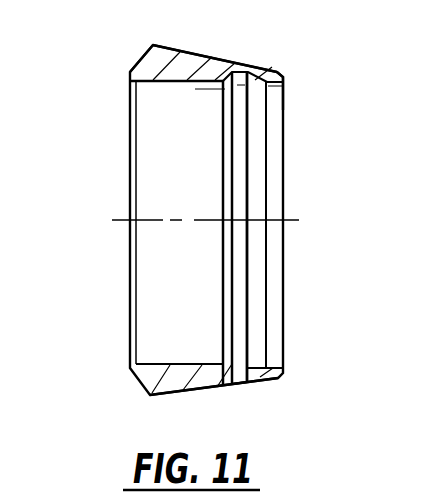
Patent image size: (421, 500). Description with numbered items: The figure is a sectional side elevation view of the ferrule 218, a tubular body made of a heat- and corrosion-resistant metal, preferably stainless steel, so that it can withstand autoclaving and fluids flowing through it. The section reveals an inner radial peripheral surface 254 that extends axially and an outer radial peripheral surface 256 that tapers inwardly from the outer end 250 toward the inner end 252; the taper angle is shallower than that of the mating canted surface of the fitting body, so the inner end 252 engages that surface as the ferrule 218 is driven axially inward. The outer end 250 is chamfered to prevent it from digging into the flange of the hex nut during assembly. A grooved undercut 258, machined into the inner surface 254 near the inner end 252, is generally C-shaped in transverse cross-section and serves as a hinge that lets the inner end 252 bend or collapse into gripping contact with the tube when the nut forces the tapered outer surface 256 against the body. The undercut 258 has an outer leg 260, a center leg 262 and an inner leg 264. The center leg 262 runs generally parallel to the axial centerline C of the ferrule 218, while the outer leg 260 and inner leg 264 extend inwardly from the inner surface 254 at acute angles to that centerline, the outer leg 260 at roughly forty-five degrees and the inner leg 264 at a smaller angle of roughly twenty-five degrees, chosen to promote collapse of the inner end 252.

The ferrule 218 is at (128, 193).
The outer end 250 is at (130, 73).
The inner end 252 is at (284, 77).
The inner radial peripheral surface 254 is at (162, 85).
The outer radial peripheral surface 256 is at (219, 58).
The grooved undercut 258 is at (248, 210).
The outer leg 260 is at (247, 376).
The center leg 262 is at (240, 370).
The inner leg 264 is at (263, 366).
The axial centerline C is at (120, 222).